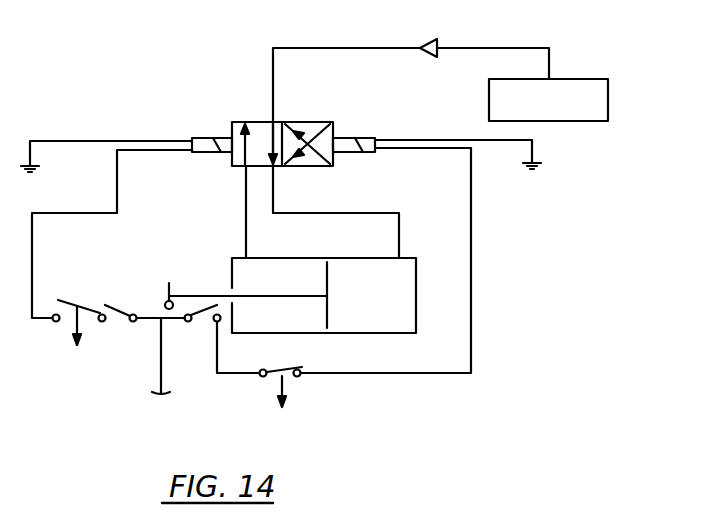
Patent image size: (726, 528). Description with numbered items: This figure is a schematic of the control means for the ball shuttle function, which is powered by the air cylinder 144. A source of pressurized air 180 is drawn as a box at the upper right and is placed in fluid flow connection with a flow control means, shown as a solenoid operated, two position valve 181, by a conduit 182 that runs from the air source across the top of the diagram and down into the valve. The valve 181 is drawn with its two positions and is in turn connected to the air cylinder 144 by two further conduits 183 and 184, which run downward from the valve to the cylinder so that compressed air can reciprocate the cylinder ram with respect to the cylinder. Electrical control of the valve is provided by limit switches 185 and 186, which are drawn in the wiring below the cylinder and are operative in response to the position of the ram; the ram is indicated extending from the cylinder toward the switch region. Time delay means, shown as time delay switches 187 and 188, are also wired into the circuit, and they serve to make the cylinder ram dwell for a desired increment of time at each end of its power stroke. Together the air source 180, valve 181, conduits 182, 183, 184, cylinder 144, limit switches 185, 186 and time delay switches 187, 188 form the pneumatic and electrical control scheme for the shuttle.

The source of pressurized air 180 is at (611, 95).
The solenoid operated two position valve 181 is at (305, 122).
The conduit 182 is at (346, 46).
The conduit 183 is at (246, 201).
The conduit 184 is at (382, 213).
The air cylinder 144 is at (357, 240).
The limit switch 185 is at (117, 303).
The limit switch 186 is at (203, 321).
The time delay switch 187 is at (287, 378).
The time delay switch 188 is at (90, 315).